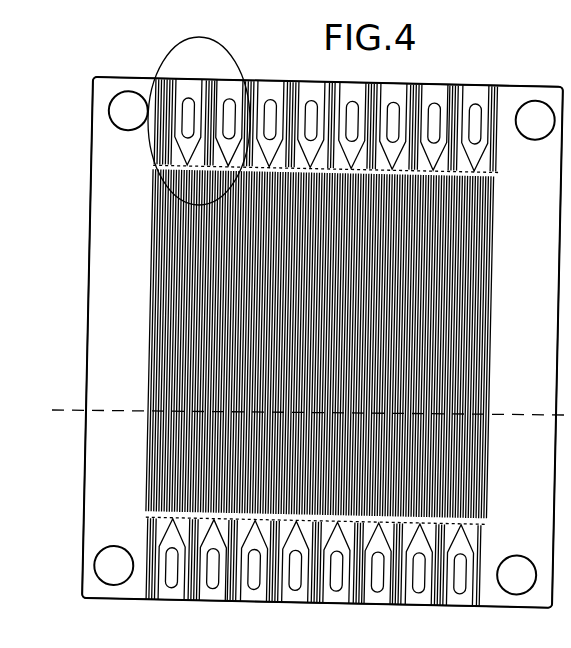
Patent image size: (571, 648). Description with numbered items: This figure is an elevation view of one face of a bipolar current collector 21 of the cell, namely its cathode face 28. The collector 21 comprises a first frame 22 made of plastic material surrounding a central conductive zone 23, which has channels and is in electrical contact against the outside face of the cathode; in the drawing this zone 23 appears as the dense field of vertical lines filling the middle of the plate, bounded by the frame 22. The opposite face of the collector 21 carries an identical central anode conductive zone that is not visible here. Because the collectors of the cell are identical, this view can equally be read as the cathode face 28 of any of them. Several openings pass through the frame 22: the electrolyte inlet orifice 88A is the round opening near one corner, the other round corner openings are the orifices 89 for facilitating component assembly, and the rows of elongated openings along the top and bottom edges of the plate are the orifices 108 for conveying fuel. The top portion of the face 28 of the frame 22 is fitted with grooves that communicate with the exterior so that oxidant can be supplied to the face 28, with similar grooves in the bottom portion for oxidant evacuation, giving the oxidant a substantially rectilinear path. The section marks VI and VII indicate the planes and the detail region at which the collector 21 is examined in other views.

The bipolar current collector 21 is at (118, 72).
The first frame 22 is at (130, 145).
The central conductive zone 23 is at (197, 453).
The cathode face 28 is at (124, 206).
The electrolyte inlet orifice 88A is at (119, 107).
The orifices for facilitating component assembly 89 is at (540, 116).
The orifices for conveying fuel 108 is at (240, 162).
The section VII detail VII is at (190, 40).
The section line VI is at (58, 402).